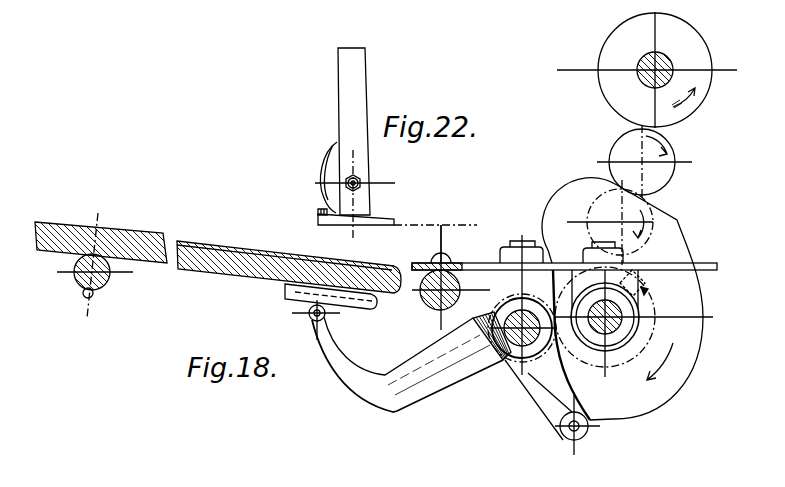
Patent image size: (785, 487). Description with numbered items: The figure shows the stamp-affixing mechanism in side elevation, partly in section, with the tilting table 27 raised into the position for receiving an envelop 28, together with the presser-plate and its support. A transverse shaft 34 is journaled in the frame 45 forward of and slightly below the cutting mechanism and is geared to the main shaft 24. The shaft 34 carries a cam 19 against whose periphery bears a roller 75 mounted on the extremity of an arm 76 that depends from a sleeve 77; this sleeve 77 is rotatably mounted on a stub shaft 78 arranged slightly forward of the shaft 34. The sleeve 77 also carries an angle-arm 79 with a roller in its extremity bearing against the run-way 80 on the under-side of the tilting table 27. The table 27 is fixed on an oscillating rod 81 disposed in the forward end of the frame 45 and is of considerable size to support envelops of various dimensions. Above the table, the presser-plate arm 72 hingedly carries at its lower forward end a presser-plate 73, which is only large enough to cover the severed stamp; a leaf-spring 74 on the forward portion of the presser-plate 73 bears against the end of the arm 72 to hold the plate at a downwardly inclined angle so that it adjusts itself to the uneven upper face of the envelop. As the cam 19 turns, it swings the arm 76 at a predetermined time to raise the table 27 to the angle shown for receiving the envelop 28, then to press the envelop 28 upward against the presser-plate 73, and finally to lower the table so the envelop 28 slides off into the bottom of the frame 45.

In FIG. 18, the cam 19 is at (672, 388).
In FIG. 18, the main shaft 24 is at (664, 70).
In FIG. 18, the tilting table 27 is at (289, 274).
In FIG. 18, the envelop 28 is at (274, 252).
In FIG. 18, the transverse shaft 34 is at (640, 321).
In FIG. 18, the frame 45 is at (711, 263).
In FIG. 22, the presser-plate arm 72 is at (352, 113).
In FIG. 22, the presser-plate 73 is at (358, 215).
In FIG. 22, the leaf-spring 74 is at (333, 174).
In FIG. 18, the roller 75 is at (652, 428).
In FIG. 18, the arm 76 is at (545, 405).
In FIG. 18, the sleeve 77 is at (511, 356).
In FIG. 18, the stub shaft 78 is at (504, 323).
In FIG. 18, the angle-arm 79 is at (411, 362).
In FIG. 18, the run-way 80 is at (360, 306).
In FIG. 18, the oscillating rod 81 is at (110, 284).